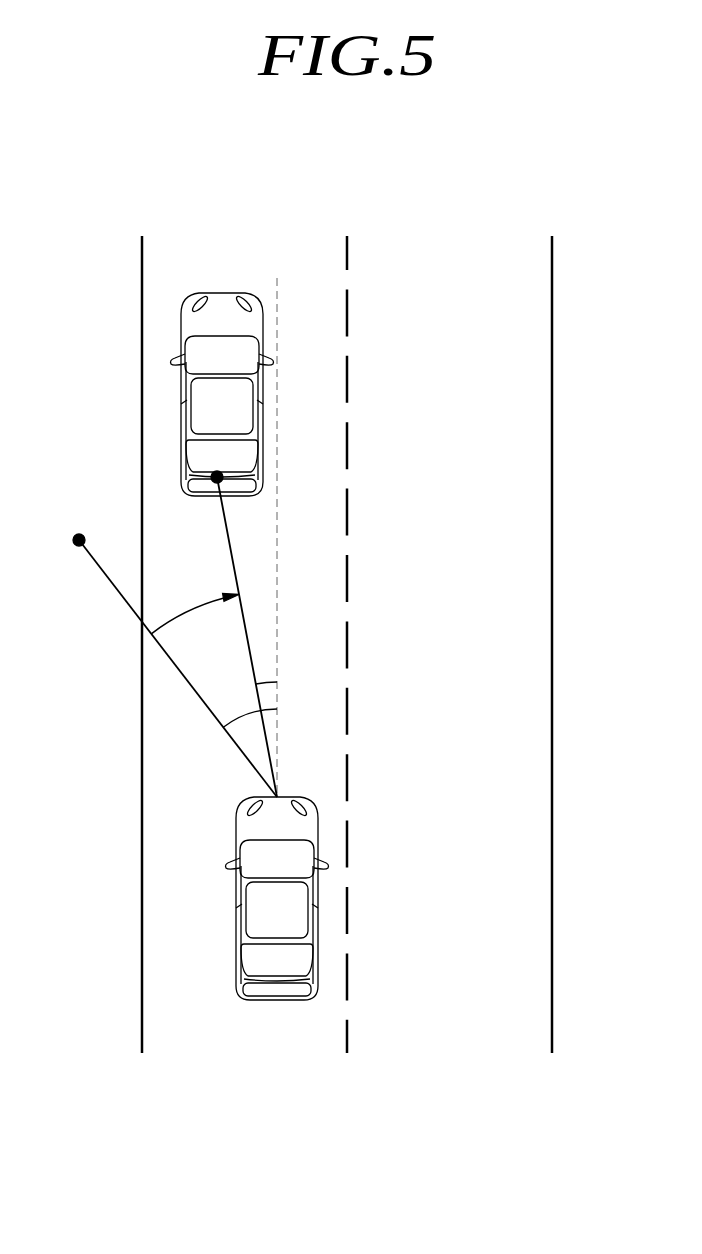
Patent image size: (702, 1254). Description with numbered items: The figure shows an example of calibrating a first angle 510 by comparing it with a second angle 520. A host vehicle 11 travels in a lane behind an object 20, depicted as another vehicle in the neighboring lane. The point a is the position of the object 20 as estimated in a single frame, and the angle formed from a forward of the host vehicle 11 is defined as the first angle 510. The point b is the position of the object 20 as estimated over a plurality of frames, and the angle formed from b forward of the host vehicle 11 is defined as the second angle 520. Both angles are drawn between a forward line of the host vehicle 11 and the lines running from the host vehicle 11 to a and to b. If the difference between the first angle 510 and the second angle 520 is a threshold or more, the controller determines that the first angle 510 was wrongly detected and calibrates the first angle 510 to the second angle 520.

The object 20 is at (223, 292).
The host vehicle 11 is at (287, 1000).
The position of the object estimated in a single frame a is at (74, 526).
The position of the object estimated in a plurality of frames b is at (215, 464).
The first angle 510 is at (232, 721).
The second angle 520 is at (268, 683).